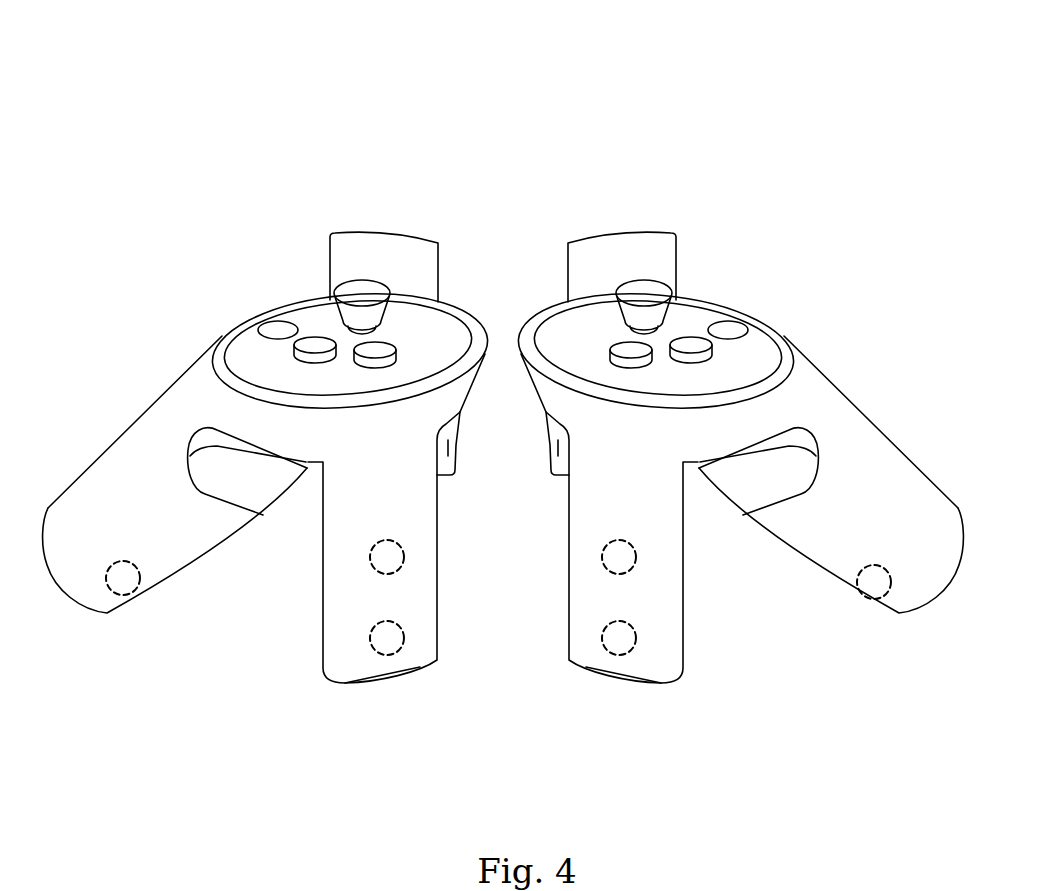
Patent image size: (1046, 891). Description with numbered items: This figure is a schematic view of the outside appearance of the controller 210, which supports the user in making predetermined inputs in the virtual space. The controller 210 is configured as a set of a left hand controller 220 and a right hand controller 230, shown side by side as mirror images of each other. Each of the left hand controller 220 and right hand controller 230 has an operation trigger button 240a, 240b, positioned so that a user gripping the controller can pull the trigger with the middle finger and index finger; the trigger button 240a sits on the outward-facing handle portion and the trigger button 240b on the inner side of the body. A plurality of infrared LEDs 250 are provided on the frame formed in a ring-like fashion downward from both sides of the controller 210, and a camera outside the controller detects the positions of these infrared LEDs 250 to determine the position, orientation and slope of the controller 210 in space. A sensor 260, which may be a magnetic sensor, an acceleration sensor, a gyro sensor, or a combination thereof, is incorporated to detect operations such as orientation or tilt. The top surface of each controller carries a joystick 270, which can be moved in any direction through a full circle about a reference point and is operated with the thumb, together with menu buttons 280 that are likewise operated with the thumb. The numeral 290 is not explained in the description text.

The controller 210 is at (514, 53).
The left hand controller 220 is at (347, 193).
The right hand controller 230 is at (657, 178).
The operation trigger button 240a is at (227, 470).
The operation trigger button 240b is at (556, 458).
The infrared LED 250 is at (611, 554).
The sensor 260 is at (125, 590).
The joystick 270 is at (355, 292).
The menu button 280 is at (315, 337).
The grip portion 290 is at (599, 670).